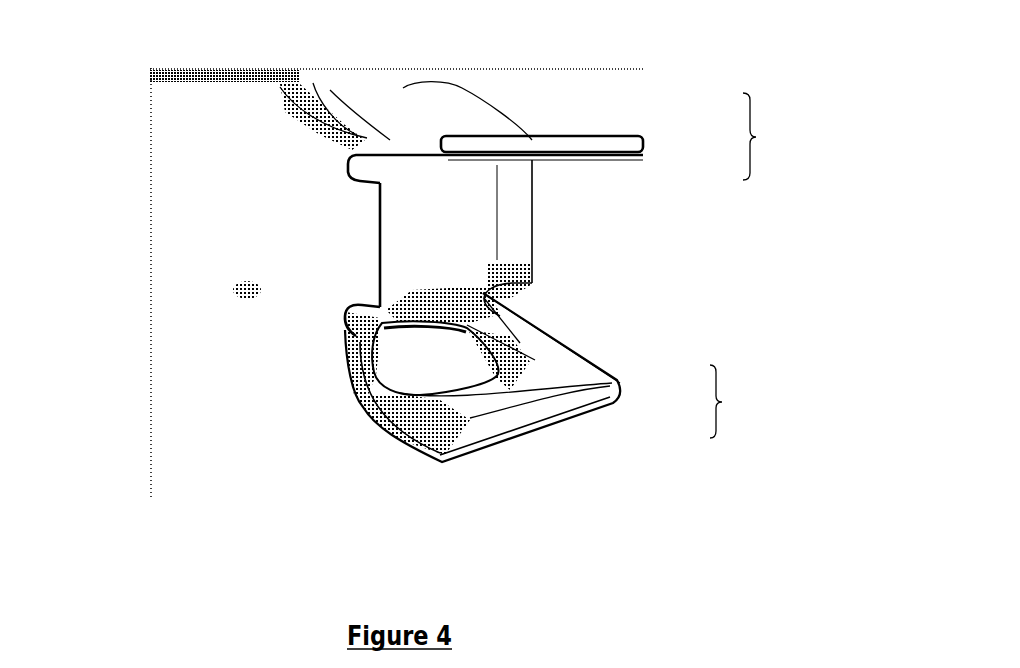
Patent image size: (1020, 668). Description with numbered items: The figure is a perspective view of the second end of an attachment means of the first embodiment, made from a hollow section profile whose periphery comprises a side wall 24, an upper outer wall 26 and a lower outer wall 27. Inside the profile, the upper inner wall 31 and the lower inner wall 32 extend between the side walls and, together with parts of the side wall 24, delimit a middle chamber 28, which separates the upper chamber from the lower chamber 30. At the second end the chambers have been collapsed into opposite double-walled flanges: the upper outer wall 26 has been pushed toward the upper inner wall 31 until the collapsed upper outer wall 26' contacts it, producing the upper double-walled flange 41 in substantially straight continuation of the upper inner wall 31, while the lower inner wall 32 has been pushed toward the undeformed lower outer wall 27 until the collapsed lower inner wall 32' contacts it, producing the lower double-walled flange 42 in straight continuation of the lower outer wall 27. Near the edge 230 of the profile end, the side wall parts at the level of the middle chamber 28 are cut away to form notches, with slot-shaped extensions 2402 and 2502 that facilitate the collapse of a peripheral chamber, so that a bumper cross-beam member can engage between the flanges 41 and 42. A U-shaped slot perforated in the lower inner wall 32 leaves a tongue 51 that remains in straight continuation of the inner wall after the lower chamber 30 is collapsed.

The side wall 24 is at (222, 215).
The upper outer wall 26 is at (341, 79).
The collapsed upper outer wall 26' is at (592, 124).
The lower outer wall 27 is at (490, 425).
The middle chamber 28 is at (493, 218).
The lower chamber 30 is at (425, 355).
The upper inner wall 31 is at (605, 154).
The lower inner wall 32 is at (550, 311).
The collapsed lower inner wall 32' is at (589, 374).
The upper double-walled flange 41 is at (766, 136).
The lower double-walled flange 42 is at (737, 401).
The tongue 51 is at (497, 316).
The edge of the profile end 230 is at (473, 450).
The slot-shaped extension 2402 is at (343, 323).
The slot-shaped extension 2502 is at (507, 300).